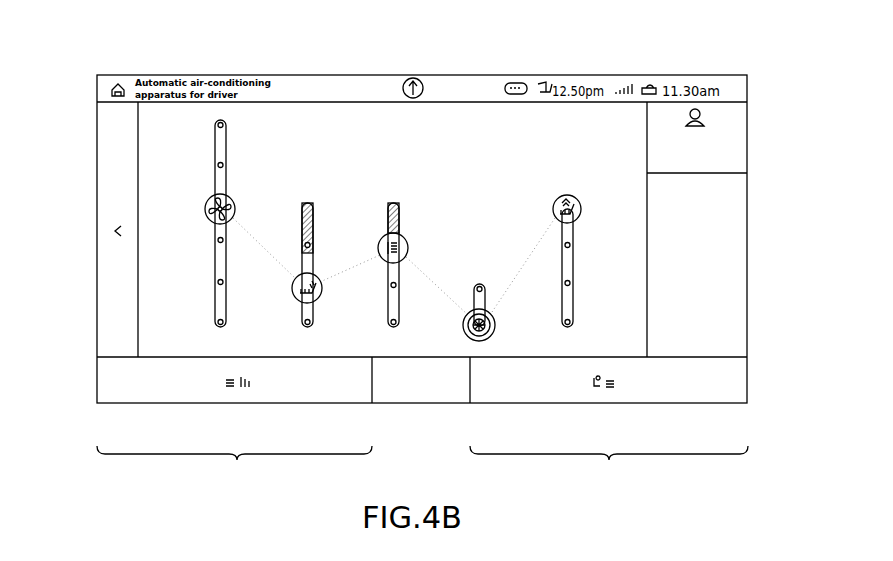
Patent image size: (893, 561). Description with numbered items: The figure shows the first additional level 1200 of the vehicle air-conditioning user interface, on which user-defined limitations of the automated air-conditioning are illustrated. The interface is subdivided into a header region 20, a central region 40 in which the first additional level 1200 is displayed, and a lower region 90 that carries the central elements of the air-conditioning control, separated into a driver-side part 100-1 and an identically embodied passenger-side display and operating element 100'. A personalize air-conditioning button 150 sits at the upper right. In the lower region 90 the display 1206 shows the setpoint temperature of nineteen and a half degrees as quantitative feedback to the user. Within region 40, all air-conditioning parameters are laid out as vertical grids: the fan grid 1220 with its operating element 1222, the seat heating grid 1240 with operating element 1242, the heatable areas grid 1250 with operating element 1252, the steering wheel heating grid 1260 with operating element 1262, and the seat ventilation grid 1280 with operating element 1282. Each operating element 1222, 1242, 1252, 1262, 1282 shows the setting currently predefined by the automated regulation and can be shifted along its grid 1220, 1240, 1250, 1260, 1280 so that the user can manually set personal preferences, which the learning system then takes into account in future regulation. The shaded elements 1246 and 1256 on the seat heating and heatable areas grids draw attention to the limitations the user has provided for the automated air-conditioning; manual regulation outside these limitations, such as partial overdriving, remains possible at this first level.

The region 20 is at (97, 92).
The region 40 is at (97, 341).
The lower region 90 is at (97, 383).
The personalize air-conditioning button 150 is at (737, 127).
The first additional level 1200 is at (701, 54).
The display 1206 is at (203, 397).
The grid 1220 is at (215, 120).
The operating element 1222 is at (205, 209).
The grid 1240 is at (339, 241).
The operating element 1242 is at (298, 302).
The shaded display element 1246 is at (313, 232).
The grid 1250 is at (429, 232).
The operating element 1252 is at (393, 330).
The shaded display element 1256 is at (400, 232).
The grid 1260 is at (483, 287).
The operating element 1262 is at (488, 342).
The grid 1280 is at (560, 333).
The operating element 1282 is at (583, 206).
The driver region 100-1 is at (234, 467).
The display and operating element 100' is at (609, 467).